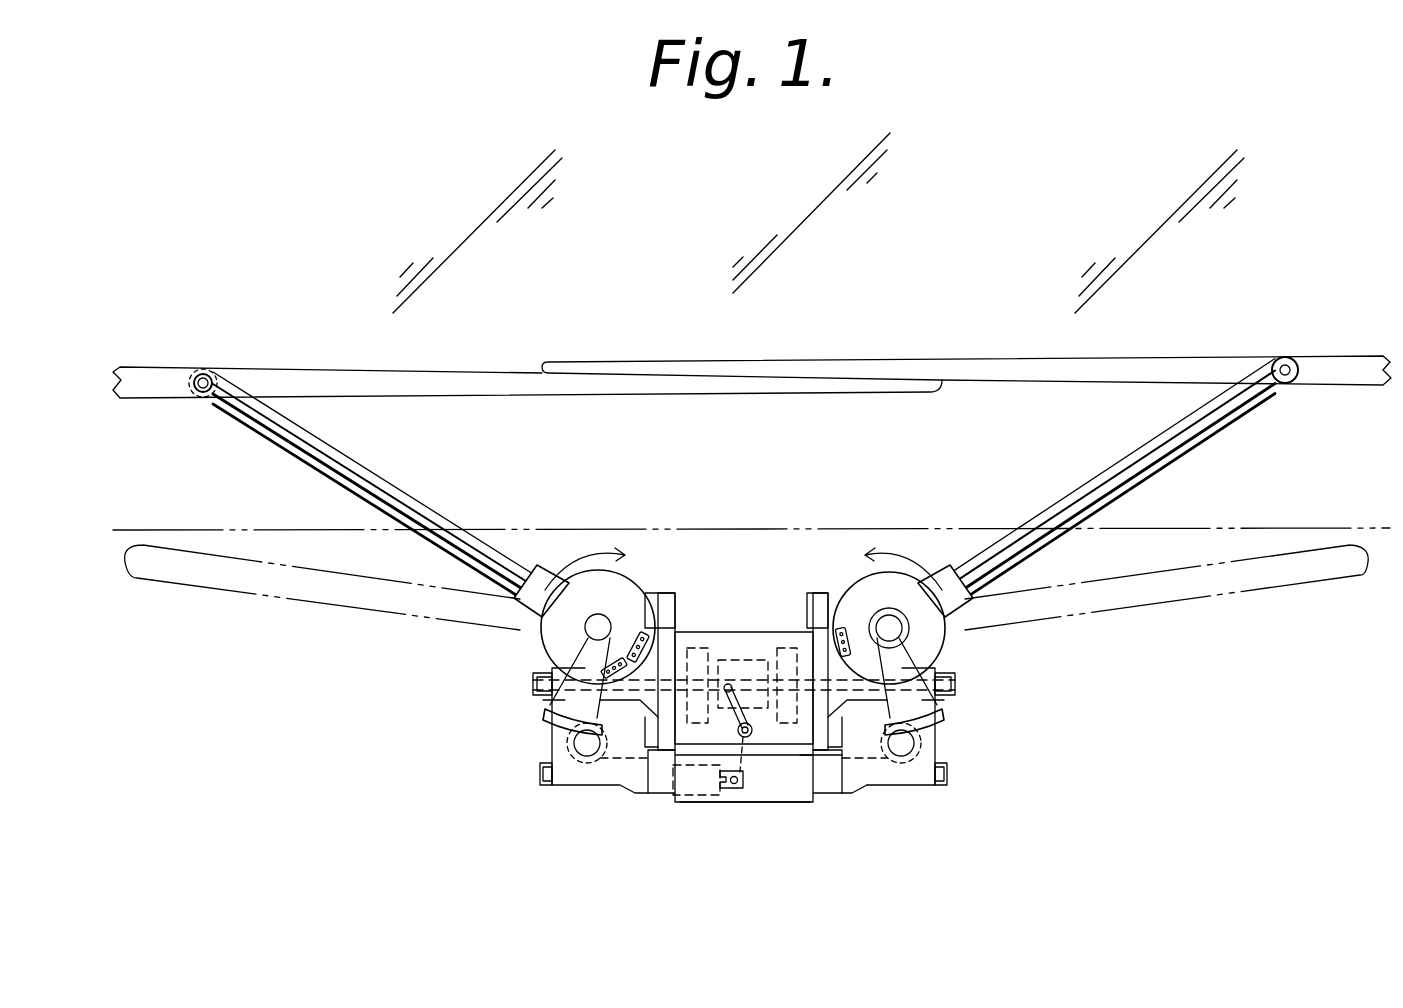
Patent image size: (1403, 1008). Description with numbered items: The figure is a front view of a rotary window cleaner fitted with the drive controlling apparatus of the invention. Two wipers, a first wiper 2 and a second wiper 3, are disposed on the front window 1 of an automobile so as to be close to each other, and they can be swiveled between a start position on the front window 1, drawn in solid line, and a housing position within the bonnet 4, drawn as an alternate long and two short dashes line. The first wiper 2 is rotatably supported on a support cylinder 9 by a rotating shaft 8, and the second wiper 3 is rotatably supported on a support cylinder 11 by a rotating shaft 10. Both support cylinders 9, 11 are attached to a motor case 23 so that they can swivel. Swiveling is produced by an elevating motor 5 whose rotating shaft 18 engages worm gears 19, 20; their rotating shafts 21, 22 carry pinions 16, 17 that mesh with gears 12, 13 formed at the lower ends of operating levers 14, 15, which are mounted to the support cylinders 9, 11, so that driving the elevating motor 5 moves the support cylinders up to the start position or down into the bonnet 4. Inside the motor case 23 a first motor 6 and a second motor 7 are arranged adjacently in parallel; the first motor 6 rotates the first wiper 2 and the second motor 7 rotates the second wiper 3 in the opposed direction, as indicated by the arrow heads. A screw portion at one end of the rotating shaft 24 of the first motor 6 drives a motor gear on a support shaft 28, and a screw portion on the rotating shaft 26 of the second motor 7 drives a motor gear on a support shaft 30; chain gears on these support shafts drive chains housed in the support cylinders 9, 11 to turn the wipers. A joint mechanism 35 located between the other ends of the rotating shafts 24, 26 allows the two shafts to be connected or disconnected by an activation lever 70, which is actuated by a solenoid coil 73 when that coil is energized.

The front window 1 is at (622, 284).
The first wiper 2 is at (410, 373).
The second wiper 3 is at (993, 358).
The bonnet 4 is at (1203, 540).
The elevating motor 5 is at (758, 778).
The first motor 6 is at (703, 648).
The second motor 7 is at (779, 648).
The rotating shaft 8 is at (205, 375).
The support cylinder 9 is at (420, 503).
The rotating shaft 10 is at (1283, 358).
The support cylinder 11 is at (1060, 505).
The gear 12 is at (543, 725).
The gear 13 is at (945, 718).
The operating lever 14 is at (565, 702).
The operating lever 15 is at (950, 702).
The pinion 16 is at (555, 752).
The pinion 17 is at (913, 770).
The rotating shaft 18 is at (615, 795).
The worm gear 19 is at (563, 793).
The worm gear 20 is at (912, 746).
The rotating shaft 21 is at (587, 750).
The rotating shaft 22 is at (930, 780).
The motor case 23 is at (792, 820).
The rotating shaft 24 is at (693, 780).
The rotating shaft 26 is at (805, 793).
The support shaft 28 is at (588, 627).
The support shaft 30 is at (892, 629).
The joint mechanism 35 is at (738, 660).
The activation lever 70 is at (736, 790).
The solenoid coil 73 is at (697, 802).